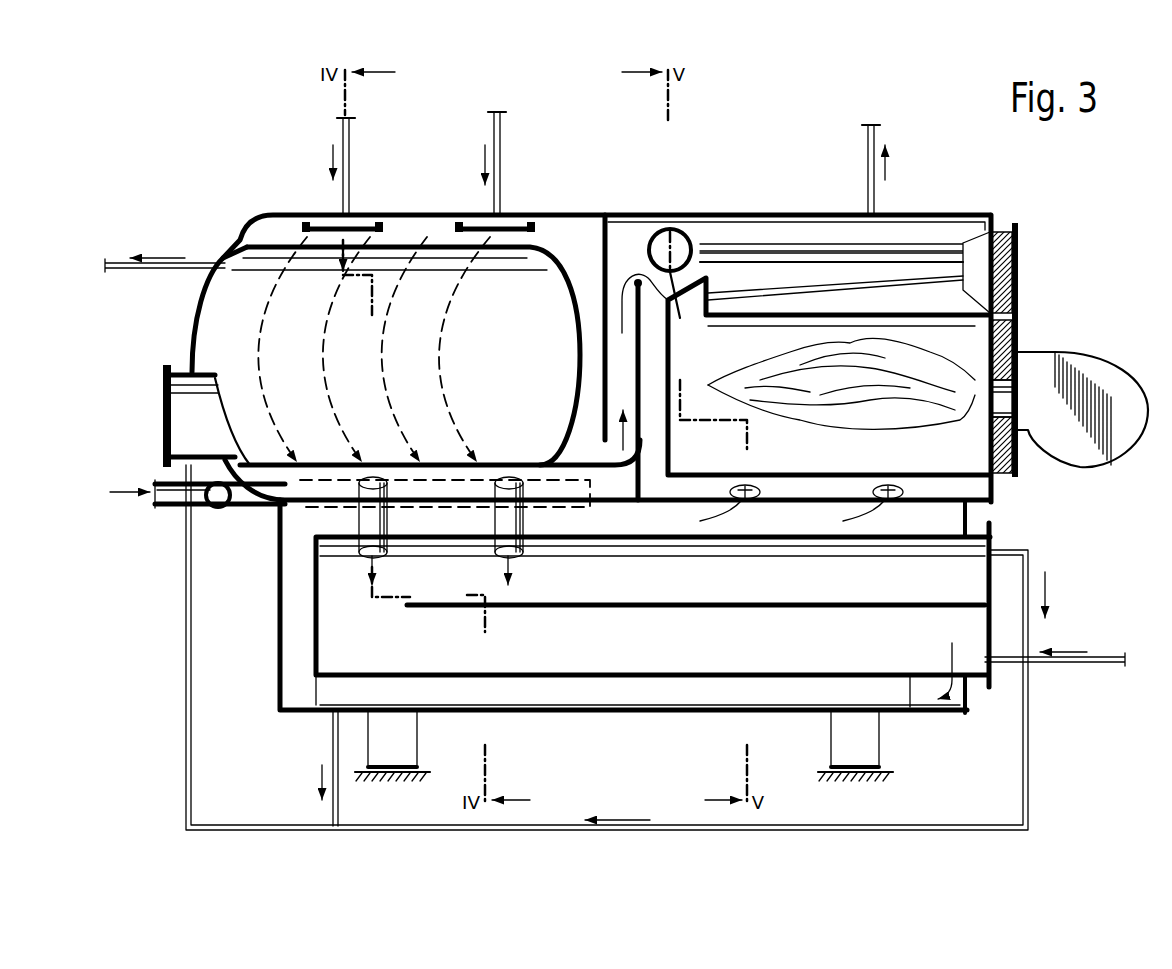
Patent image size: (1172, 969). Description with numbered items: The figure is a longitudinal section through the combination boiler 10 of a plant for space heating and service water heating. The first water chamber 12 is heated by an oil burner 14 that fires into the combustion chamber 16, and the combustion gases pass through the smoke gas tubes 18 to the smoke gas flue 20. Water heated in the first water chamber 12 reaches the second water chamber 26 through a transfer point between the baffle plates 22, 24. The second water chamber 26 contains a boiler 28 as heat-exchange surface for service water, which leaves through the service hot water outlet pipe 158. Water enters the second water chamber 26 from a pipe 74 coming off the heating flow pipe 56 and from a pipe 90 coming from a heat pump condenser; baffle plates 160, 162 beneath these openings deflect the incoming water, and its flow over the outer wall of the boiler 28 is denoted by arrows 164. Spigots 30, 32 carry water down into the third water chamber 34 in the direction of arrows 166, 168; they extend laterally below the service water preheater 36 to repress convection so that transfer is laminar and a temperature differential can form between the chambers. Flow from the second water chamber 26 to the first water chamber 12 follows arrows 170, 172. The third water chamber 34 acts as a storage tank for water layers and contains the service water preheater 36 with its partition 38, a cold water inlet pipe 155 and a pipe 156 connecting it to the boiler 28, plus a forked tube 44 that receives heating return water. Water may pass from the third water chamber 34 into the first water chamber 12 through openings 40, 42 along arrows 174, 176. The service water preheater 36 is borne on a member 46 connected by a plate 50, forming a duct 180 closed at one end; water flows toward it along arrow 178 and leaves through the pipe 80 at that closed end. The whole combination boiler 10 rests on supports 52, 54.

The combination boiler 10 is at (722, 150).
The first water chamber 12 is at (930, 232).
The oil burner 14 is at (1040, 370).
The combustion chamber 16 is at (1020, 465).
The smoke gas tubes 18 is at (905, 285).
The smoke gas flue 20 is at (683, 232).
The baffle plates 22 is at (604, 240).
The baffle plate 24 is at (633, 278).
The second water chamber 26 is at (428, 240).
The boiler 28 is at (212, 341).
The spigot 30 is at (388, 518).
The spigot 32 is at (524, 518).
The third water chamber 34 is at (280, 580).
The service water preheater 36 is at (335, 625).
The partition 38 is at (696, 625).
The opening 40 is at (752, 488).
The opening 42 is at (895, 488).
The forked tube 44 is at (172, 500).
The member 46 is at (628, 712).
The plate 50 is at (315, 692).
The support 52 is at (417, 740).
The support 54 is at (880, 740).
The heating flow pipe 56 is at (867, 133).
The pipe 74 is at (501, 130).
The pipe 80 is at (334, 744).
The pipe 90 is at (350, 128).
The inlet pipe 155 is at (1097, 658).
The pipe 156 is at (930, 832).
The service hot water outlet pipe 158 is at (200, 263).
The baffle plate 160 is at (534, 232).
The baffle plate 162 is at (322, 226).
The arrows 164 is at (260, 347).
The arrow 166 is at (378, 566).
The arrow 168 is at (515, 566).
The arrow 170 is at (622, 450).
The arrow 172 is at (627, 320).
The arrow 174 is at (742, 500).
The arrow 176 is at (885, 500).
The arrow 178 is at (952, 643).
The duct 180 is at (917, 703).